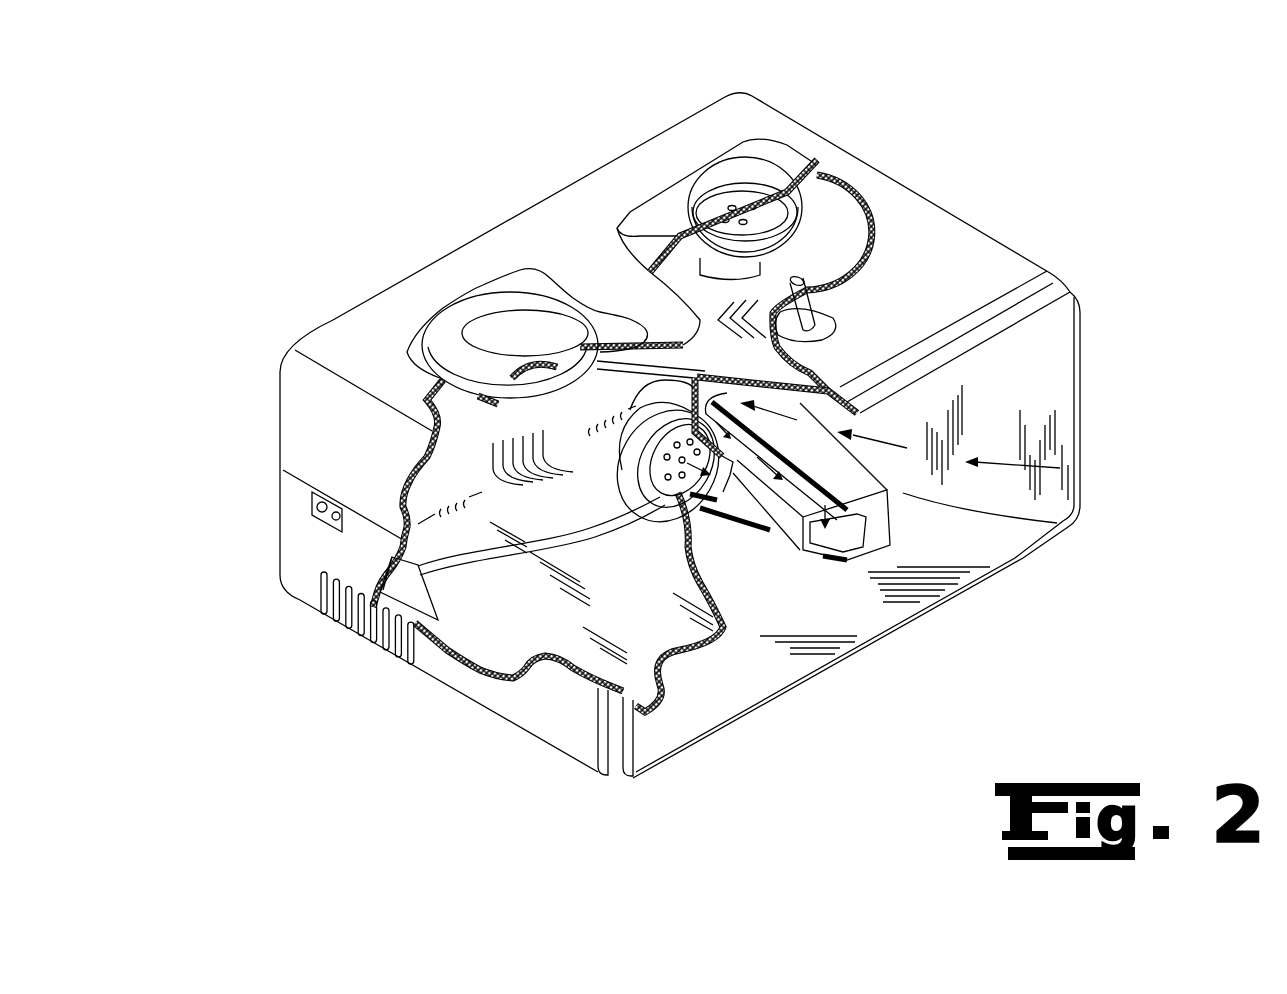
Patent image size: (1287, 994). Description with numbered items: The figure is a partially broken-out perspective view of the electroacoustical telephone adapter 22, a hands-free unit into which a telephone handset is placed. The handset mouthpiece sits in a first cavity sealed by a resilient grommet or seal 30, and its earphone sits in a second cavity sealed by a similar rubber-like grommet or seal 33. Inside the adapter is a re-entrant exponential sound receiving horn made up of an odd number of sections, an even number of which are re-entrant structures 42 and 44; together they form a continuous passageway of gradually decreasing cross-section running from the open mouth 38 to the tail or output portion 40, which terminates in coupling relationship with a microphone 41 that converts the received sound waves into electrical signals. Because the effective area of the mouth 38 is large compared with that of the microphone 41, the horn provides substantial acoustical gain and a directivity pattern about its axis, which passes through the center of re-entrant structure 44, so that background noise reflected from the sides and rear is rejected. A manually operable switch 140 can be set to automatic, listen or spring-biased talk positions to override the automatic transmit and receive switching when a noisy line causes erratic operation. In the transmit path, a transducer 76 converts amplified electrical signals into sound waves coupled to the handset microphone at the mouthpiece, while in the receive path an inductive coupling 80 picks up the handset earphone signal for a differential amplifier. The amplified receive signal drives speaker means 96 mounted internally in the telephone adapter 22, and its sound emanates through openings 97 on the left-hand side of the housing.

The telephone adapter 22 is at (995, 213).
The grommet or seal 30 is at (780, 155).
The grommet or seal 33 is at (414, 353).
The open mouth 38 is at (867, 620).
The tail or output portion 40 is at (683, 498).
The microphone 41 is at (628, 458).
The re-entrant structure 42 is at (860, 473).
The re-entrant structure 44 is at (790, 540).
The transducer 76 is at (815, 200).
The inductive coupling 80 is at (547, 390).
The speaker means 96 is at (410, 604).
The openings 97 is at (368, 640).
The manually operable switch 140 is at (840, 305).